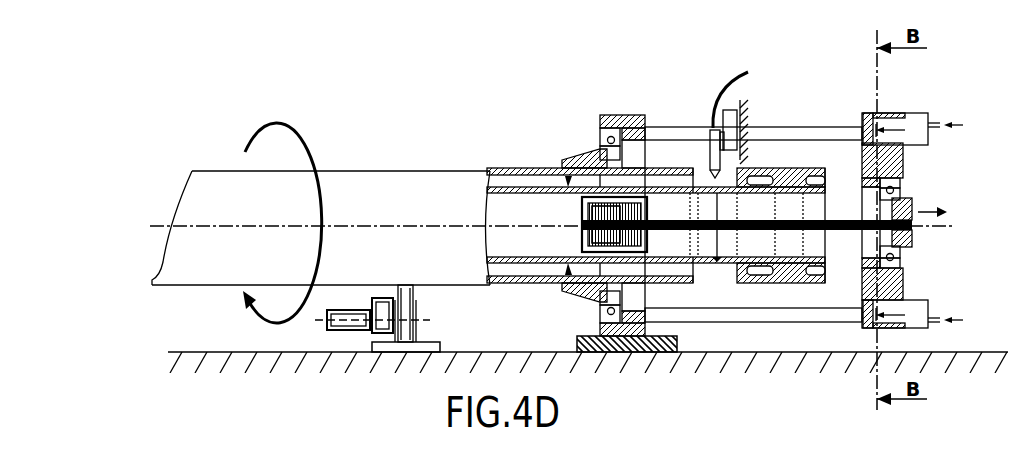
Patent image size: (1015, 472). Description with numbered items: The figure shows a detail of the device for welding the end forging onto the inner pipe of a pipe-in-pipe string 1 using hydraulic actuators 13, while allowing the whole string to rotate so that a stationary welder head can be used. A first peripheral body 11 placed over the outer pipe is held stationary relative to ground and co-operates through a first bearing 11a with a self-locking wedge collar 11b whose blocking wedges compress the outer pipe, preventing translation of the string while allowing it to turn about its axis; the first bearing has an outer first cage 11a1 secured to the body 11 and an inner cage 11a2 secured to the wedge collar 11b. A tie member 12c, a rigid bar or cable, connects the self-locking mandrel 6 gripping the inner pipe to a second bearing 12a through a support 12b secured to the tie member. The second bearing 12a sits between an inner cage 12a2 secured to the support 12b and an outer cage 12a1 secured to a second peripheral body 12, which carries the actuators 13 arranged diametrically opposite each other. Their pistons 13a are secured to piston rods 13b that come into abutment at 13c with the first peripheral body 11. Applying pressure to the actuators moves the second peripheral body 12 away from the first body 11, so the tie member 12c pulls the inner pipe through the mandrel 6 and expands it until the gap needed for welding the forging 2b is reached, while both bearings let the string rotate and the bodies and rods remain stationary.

The PiP type pipe 1 is at (429, 162).
The second junction forging 2b is at (773, 303).
The self-locking mandrel 6 is at (582, 237).
The first peripheral body 11 is at (633, 115).
The first bearing 11a is at (578, 185).
The outer first cage 11a1 is at (603, 131).
The inner cage 11a2 is at (600, 150).
The wedge collar 11b is at (565, 160).
The second peripheral body 12 is at (862, 160).
The second bearing 12a is at (947, 210).
The outer cage 12a1 is at (893, 188).
The inner cage 12a2 is at (893, 198).
The support 12b is at (913, 238).
The tie member 12c is at (841, 233).
The hydraulic actuator 13 is at (912, 120).
The piston 13a is at (862, 130).
The piston rod 13b is at (685, 127).
The abutment 13c is at (657, 127).